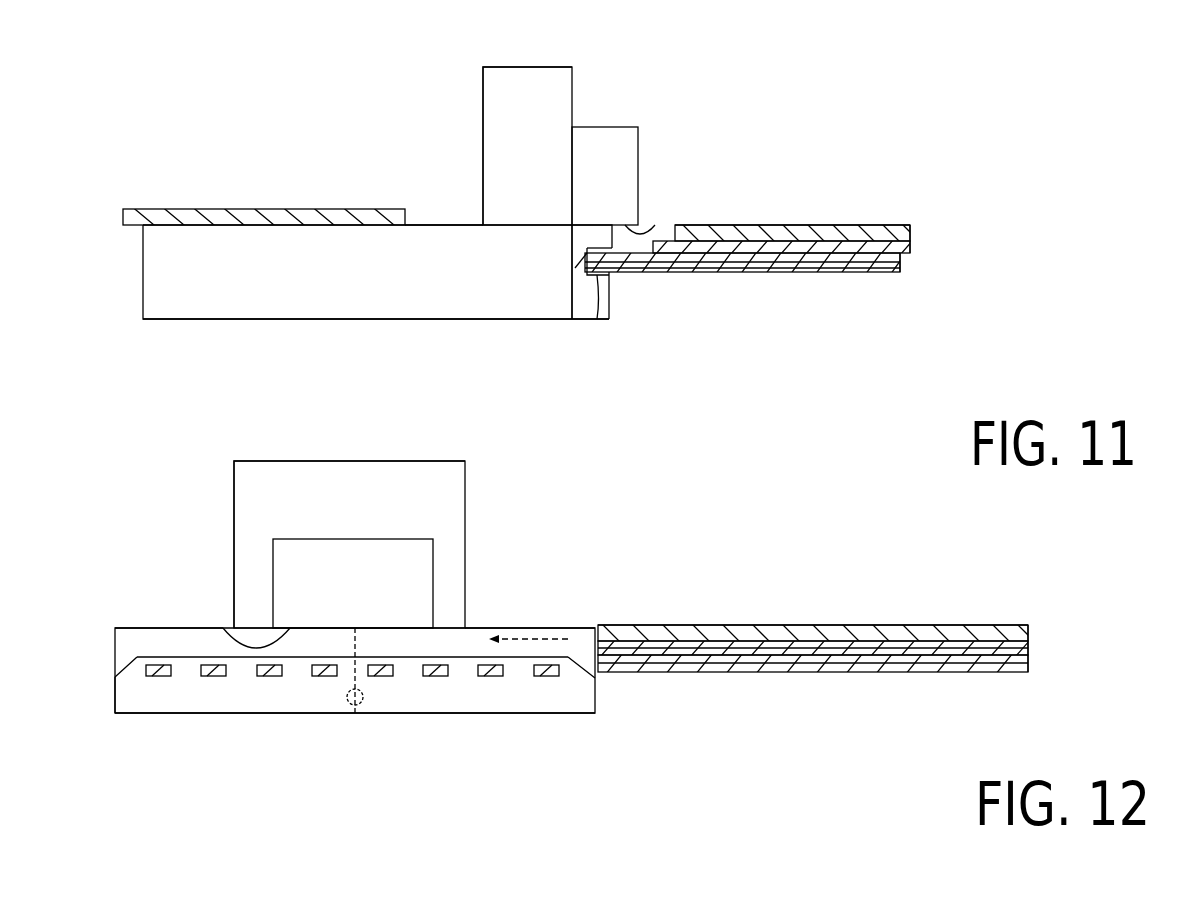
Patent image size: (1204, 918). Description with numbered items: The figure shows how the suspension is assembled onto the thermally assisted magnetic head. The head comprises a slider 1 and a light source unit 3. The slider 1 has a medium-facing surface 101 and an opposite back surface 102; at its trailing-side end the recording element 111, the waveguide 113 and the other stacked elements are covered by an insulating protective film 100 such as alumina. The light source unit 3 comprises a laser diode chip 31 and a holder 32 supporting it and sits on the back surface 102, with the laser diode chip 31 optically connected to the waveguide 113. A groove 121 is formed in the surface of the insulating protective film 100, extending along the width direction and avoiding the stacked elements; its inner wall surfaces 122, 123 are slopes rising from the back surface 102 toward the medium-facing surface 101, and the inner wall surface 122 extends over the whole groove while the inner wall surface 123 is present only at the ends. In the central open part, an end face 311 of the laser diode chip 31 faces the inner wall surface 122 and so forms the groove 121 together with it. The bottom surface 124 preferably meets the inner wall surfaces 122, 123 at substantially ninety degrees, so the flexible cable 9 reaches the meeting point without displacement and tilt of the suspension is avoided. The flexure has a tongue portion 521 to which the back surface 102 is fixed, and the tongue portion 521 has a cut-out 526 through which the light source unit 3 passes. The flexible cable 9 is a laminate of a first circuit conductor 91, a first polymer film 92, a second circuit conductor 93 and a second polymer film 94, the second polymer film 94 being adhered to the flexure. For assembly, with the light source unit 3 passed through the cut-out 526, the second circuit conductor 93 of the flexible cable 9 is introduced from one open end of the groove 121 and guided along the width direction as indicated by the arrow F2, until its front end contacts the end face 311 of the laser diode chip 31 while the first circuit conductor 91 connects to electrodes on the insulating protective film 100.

In FIG. 11, the slider 1 is at (178, 262).
In FIG. 11, the light source unit 3 is at (480, 86).
In FIG. 12, the light source unit 3 is at (238, 457).
In FIG. 11, the flexible cable 9 is at (899, 290).
In FIG. 12, the flexible cable 9 is at (1026, 687).
In FIG. 11, the laser diode chip 31 is at (638, 146).
In FIG. 12, the laser diode chip 31 is at (440, 550).
In FIG. 11, the holder 32 is at (572, 88).
In FIG. 12, the holder 32 is at (440, 482).
In FIG. 11, the first circuit conductor 91 is at (755, 272).
In FIG. 12, the first circuit conductor 91 is at (878, 672).
In FIG. 11, the first polymer film 92 is at (878, 270).
In FIG. 12, the first polymer film 92 is at (1002, 672).
In FIG. 11, the second circuit conductor 93 is at (905, 250).
In FIG. 12, the second circuit conductor 93 is at (1028, 650).
In FIG. 11, the second polymer film 94 is at (897, 235).
In FIG. 12, the second polymer film 94 is at (1025, 635).
In FIG. 11, the insulating protective film 100 is at (608, 322).
In FIG. 12, the insulating protective film 100 is at (568, 688).
In FIG. 11, the medium-facing surface 101 is at (210, 320).
In FIG. 12, the medium-facing surface 101 is at (565, 713).
In FIG. 11, the back surface 102 is at (483, 224).
In FIG. 12, the back surface 102 is at (470, 627).
In FIG. 12, the recording element 111 is at (363, 705).
In FIG. 12, the waveguide 113 is at (350, 680).
In FIG. 11, the groove 121 is at (630, 266).
In FIG. 12, the groove 121 is at (205, 640).
In FIG. 11, the inner wall surface 122 is at (615, 278).
In FIG. 12, the inner wall surface 122 is at (132, 664).
In FIG. 11, the inner wall surface 123 is at (585, 256).
In FIG. 12, the inner wall surface 123 is at (140, 632).
In FIG. 11, the bottom surface 124 is at (597, 320).
In FIG. 12, the bottom surface 124 is at (160, 640).
In FIG. 11, the end face 311 is at (640, 232).
In FIG. 12, the end face 311 is at (250, 646).
In FIG. 11, the tongue portion 521 is at (875, 225).
In FIG. 12, the tongue portion 521 is at (1000, 625).
In FIG. 11, the cut-out 526 is at (430, 212).
In FIG. 12, the arrow F2 is at (530, 636).